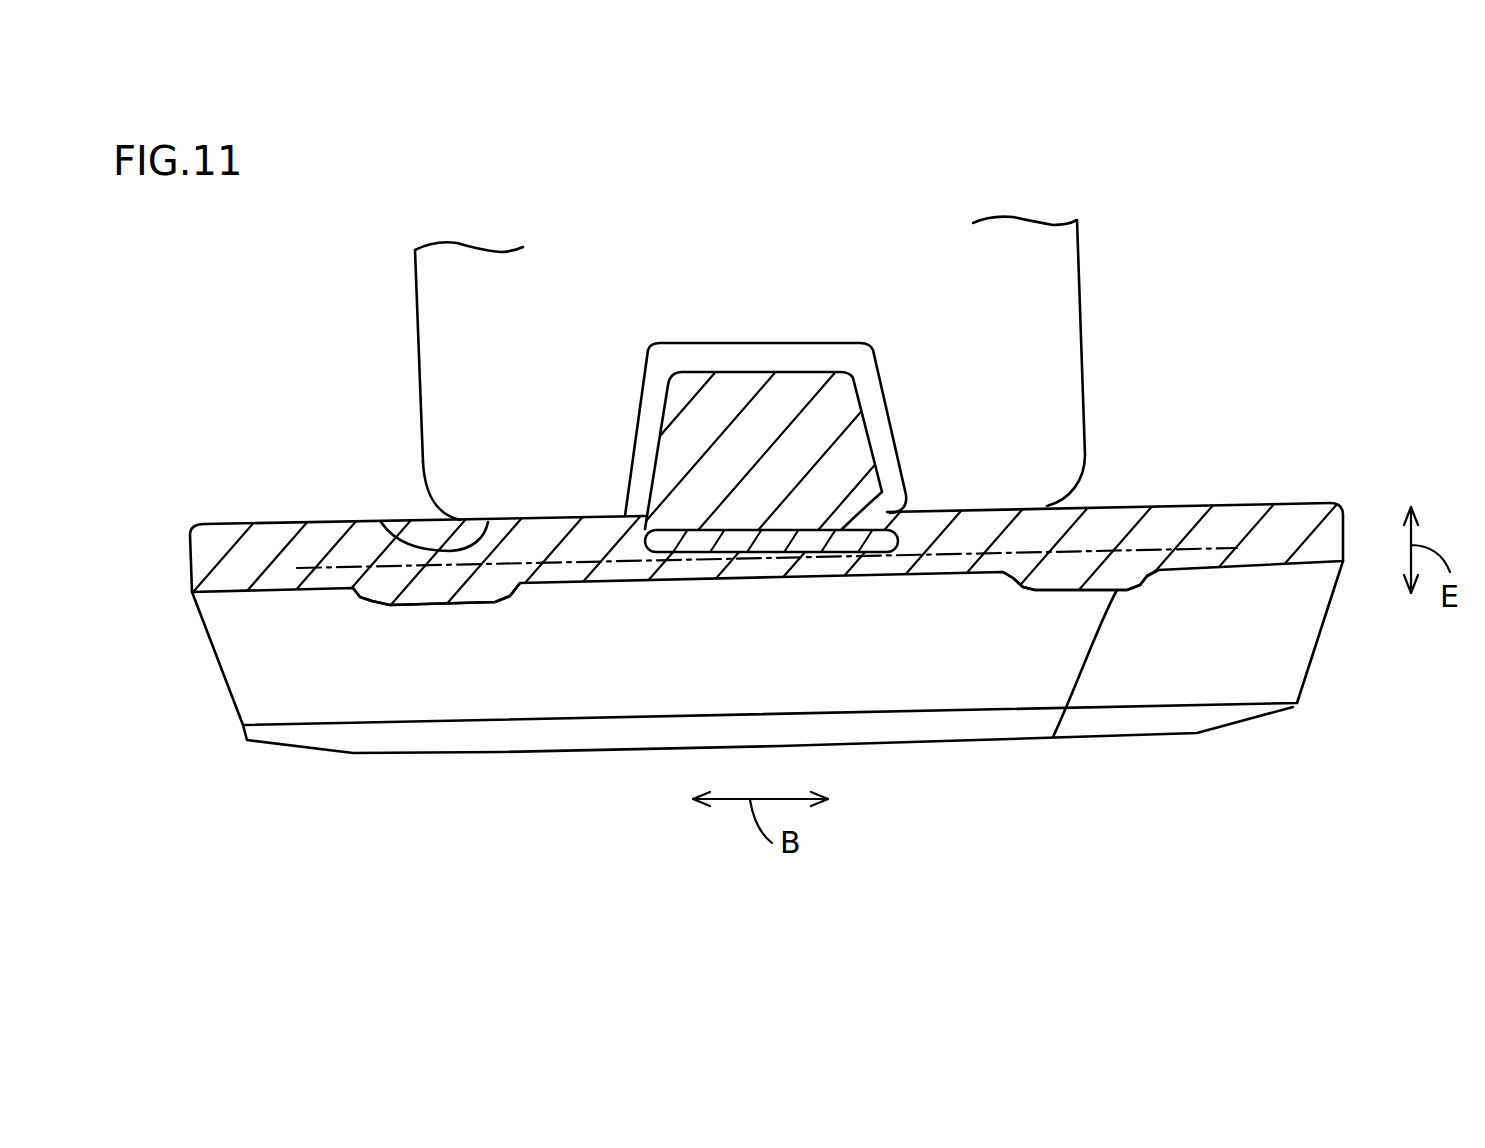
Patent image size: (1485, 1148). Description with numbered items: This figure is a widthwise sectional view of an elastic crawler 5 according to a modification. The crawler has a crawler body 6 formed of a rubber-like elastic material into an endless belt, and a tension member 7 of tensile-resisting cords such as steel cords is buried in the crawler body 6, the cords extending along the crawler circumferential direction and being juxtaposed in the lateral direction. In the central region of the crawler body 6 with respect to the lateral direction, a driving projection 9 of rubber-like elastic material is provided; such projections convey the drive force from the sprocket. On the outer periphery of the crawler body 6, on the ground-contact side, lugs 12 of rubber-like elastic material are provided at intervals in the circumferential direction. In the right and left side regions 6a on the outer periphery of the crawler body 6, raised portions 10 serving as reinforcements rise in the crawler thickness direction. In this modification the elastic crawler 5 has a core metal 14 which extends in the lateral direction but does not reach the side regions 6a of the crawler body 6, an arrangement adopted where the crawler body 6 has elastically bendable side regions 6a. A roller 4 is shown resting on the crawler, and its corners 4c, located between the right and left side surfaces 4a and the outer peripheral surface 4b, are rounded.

The roller 4 is at (1098, 283).
The right and left side surfaces 4a is at (1086, 394).
The outer peripheral surface 4b is at (381, 522).
The corners 4c is at (462, 495).
The elastic crawler 5 is at (1287, 470).
The crawler body 6 is at (1292, 520).
The side regions 6a is at (1228, 502).
The tension member 7 is at (1130, 552).
The driving projections 9 is at (788, 385).
The raised portions 10 is at (1325, 679).
The lugs 12 is at (923, 740).
The core metal 14 is at (882, 492).